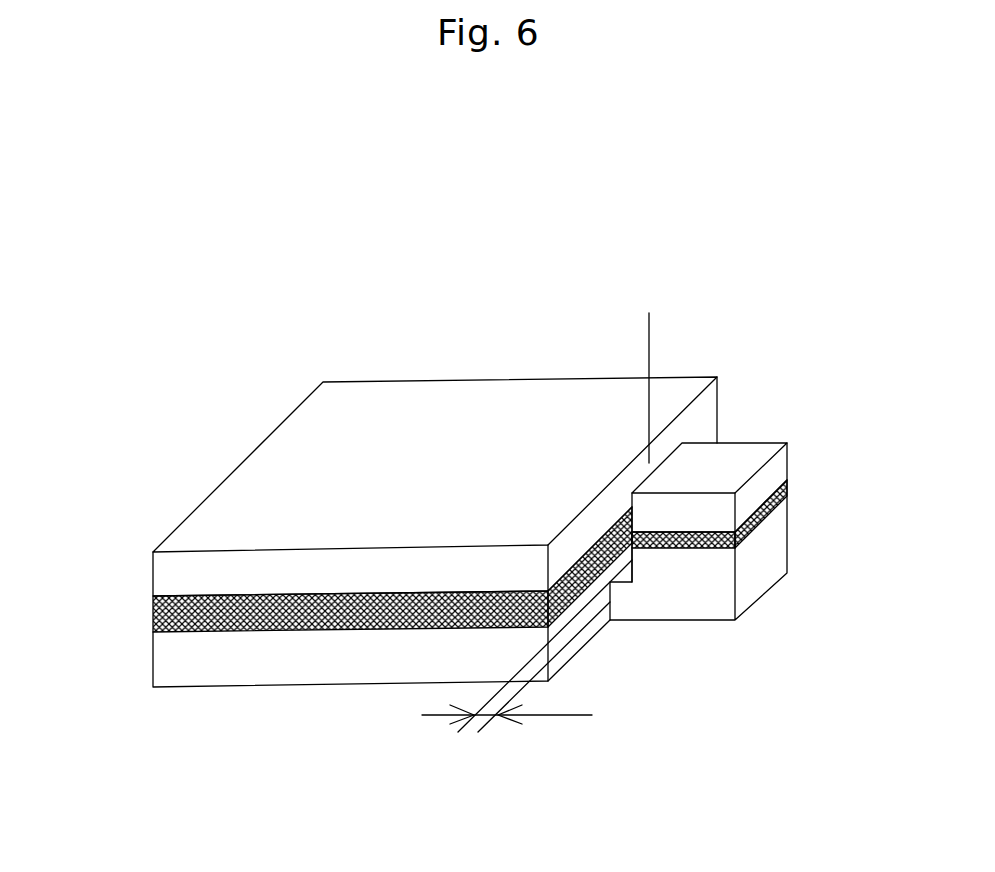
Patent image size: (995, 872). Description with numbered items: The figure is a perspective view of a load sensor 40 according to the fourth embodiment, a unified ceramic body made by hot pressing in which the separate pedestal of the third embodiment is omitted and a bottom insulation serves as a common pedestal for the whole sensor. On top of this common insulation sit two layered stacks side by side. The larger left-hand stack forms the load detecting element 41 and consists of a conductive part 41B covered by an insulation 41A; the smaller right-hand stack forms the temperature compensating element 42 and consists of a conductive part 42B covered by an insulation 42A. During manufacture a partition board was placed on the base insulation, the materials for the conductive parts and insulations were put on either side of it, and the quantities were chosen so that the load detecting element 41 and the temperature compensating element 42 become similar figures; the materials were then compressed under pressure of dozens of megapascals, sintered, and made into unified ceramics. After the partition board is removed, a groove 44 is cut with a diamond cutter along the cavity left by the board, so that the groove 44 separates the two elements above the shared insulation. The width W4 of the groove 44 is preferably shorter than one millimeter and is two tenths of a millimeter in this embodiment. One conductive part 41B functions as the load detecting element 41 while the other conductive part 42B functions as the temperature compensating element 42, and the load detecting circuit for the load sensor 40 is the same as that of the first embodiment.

The load sensor 40 is at (292, 270).
The load detecting element 41 is at (418, 397).
The insulation 41A is at (172, 579).
The conductive part 41B is at (187, 631).
The temperature compensating element 42 is at (733, 450).
The insulation 42A is at (777, 467).
The conductive part 42B is at (770, 517).
The groove 44 is at (649, 318).
The width of the groove W4 is at (507, 731).